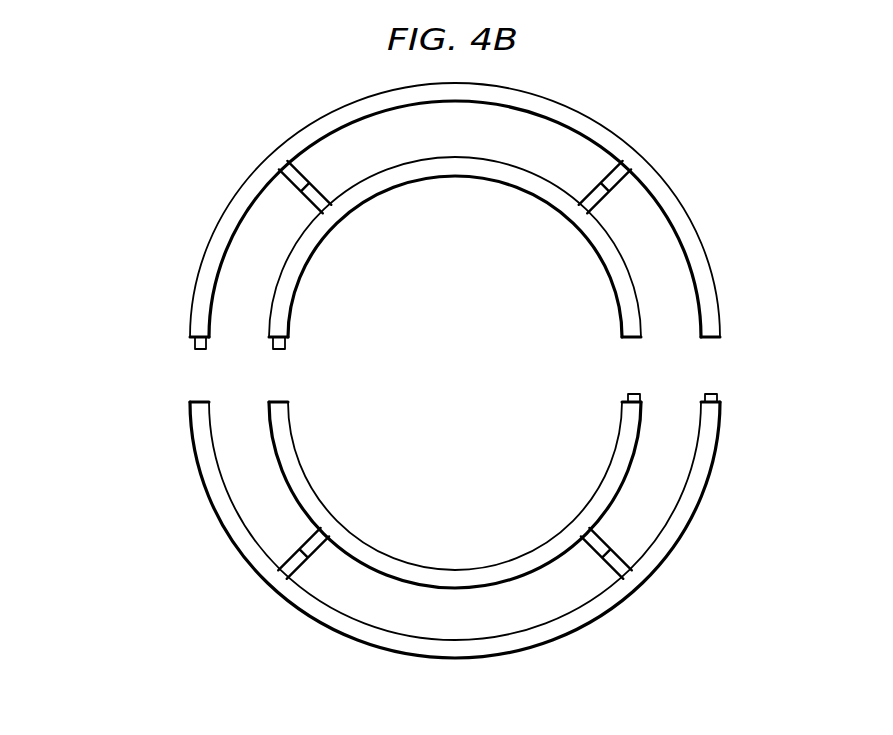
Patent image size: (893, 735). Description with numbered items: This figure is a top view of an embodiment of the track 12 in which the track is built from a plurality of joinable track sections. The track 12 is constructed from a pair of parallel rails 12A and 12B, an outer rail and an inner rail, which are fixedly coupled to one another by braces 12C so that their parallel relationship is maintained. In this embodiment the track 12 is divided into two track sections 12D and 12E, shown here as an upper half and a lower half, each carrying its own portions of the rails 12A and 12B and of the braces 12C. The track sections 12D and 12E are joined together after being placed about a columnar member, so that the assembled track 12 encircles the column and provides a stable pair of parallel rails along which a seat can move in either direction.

The track 12 is at (84, 84).
The parallel rail 12A is at (700, 245).
The parallel rail 12B is at (617, 304).
The brace 12C is at (306, 210).
The track section 12D is at (152, 84).
The track section 12E is at (156, 406).